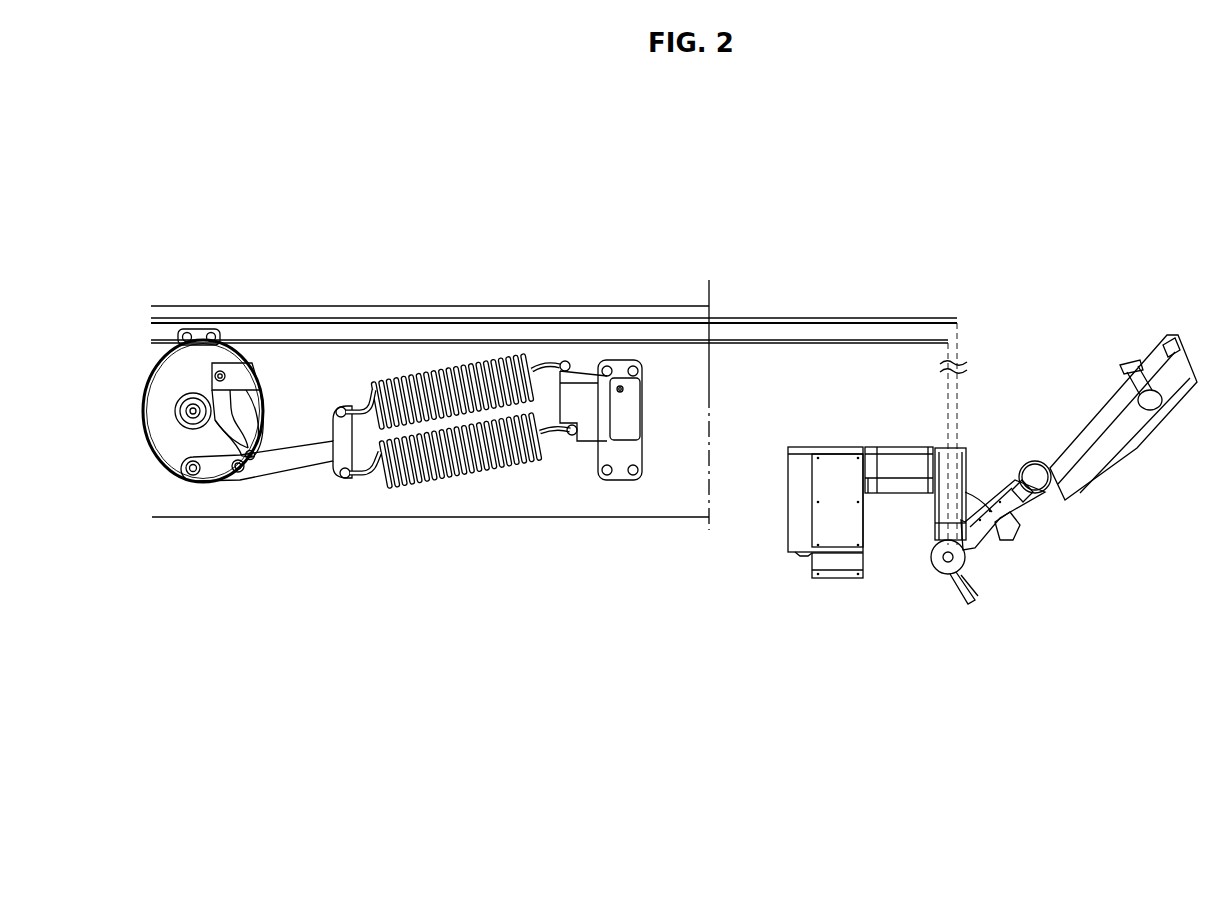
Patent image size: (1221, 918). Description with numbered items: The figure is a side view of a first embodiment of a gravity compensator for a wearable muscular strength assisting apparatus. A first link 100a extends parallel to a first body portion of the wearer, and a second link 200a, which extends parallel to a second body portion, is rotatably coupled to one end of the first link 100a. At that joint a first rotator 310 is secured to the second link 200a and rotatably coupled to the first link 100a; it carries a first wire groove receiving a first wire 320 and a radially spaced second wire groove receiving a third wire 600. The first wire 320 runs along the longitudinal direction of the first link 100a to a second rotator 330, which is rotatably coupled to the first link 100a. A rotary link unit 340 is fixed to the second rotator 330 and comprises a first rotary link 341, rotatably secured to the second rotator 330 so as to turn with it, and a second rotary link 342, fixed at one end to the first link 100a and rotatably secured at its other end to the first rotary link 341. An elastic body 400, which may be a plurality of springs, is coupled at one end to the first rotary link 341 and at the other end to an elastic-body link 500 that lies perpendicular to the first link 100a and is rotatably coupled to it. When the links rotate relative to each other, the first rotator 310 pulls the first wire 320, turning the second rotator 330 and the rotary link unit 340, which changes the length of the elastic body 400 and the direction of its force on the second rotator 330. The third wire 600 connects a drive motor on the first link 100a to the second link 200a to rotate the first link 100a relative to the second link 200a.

The first link 100a is at (951, 467).
The second link 200a is at (980, 523).
The first rotator 310 is at (946, 573).
The first wire 320 is at (640, 325).
The second rotator 330 is at (190, 370).
The rotary link unit 340 is at (233, 486).
The first rotary link 341 is at (215, 483).
The second rotary link 342 is at (230, 408).
The elastic body 400 is at (487, 390).
The elastic-body link 500 is at (582, 393).
The third wire 600 is at (755, 318).